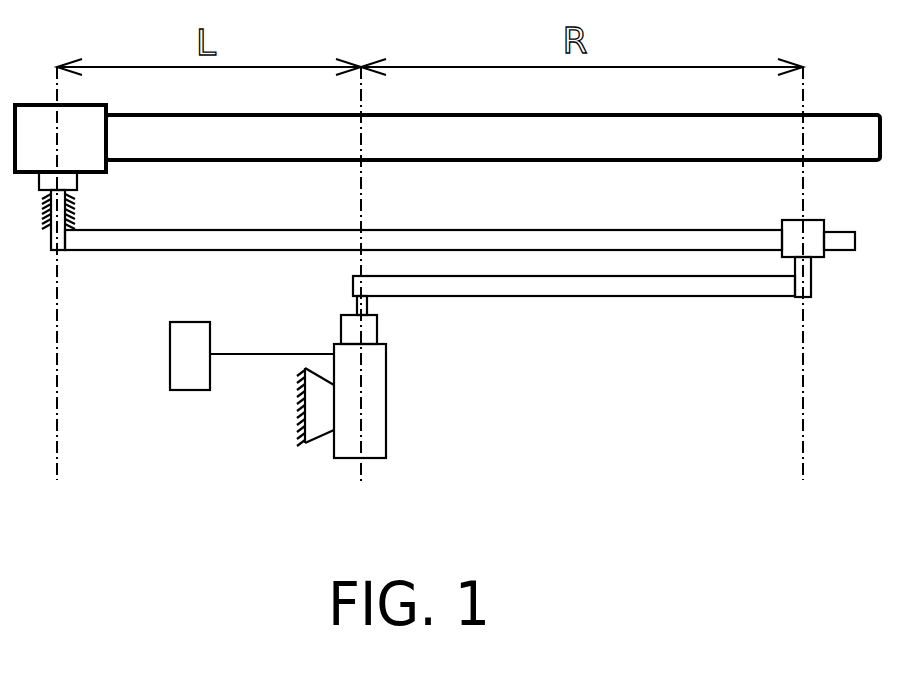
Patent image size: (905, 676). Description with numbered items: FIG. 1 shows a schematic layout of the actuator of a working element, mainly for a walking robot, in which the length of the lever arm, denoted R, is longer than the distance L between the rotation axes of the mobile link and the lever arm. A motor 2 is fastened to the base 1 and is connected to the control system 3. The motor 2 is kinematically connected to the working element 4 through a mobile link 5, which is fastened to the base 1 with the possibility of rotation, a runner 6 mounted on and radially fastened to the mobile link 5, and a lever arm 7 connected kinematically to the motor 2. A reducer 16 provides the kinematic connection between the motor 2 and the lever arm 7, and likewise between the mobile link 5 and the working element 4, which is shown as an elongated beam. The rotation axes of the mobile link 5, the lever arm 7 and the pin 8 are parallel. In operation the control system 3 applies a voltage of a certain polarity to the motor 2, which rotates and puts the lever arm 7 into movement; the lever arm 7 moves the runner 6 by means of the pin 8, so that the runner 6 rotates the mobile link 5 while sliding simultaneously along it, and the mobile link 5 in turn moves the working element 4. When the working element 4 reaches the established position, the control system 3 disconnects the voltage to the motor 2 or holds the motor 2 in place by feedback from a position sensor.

The base 1 is at (72, 203).
The motor 2 is at (385, 422).
The control system 3 is at (192, 367).
The working element 4 is at (297, 137).
The mobile link 5 is at (182, 240).
The runner 6 is at (812, 243).
The lever arm 7 is at (643, 290).
The pin 8 is at (802, 297).
The reducer 16 is at (66, 180).